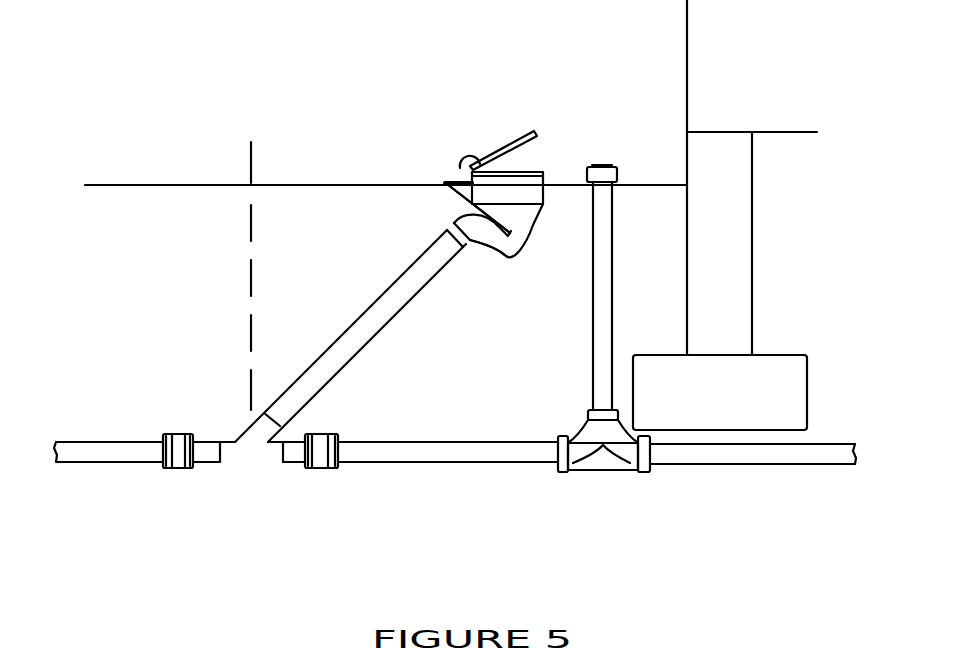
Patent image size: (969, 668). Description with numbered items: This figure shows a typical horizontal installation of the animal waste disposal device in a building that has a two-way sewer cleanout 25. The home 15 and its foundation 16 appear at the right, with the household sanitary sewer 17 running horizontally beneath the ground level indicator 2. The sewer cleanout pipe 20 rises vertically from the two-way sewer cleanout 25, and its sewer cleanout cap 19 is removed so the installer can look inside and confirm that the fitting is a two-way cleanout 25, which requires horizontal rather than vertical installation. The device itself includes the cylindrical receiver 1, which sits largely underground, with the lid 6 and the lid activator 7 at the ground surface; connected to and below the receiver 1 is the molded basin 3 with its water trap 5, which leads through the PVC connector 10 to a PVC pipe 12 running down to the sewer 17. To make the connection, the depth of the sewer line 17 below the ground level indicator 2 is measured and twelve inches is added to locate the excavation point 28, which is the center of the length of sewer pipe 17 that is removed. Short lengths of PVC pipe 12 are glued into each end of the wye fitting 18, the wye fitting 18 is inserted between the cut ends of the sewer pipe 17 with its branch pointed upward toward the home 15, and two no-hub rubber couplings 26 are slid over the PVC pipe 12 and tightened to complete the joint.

The cylindrical receiver 1 is at (543, 172).
The ground level indicator 2 is at (198, 184).
The molded basin 3 is at (535, 222).
The water trap 5 is at (482, 244).
The lid 6 is at (503, 148).
The lid activator 7 is at (463, 163).
The PVC connector 10 is at (458, 225).
The PVC pipe 12 is at (215, 440).
The home 15 is at (727, 83).
The foundation 16 is at (722, 290).
The household sanitary sewer 17 is at (120, 442).
The wye fitting 18 is at (240, 463).
The sewer cleanout cap 19 is at (598, 165).
The sewer cleanout pipe 20 is at (605, 303).
The two-way sewer cleanout 25 is at (577, 470).
The no-hub rubber plumbing coupling 26 is at (198, 468).
The excavation point 28 is at (251, 278).